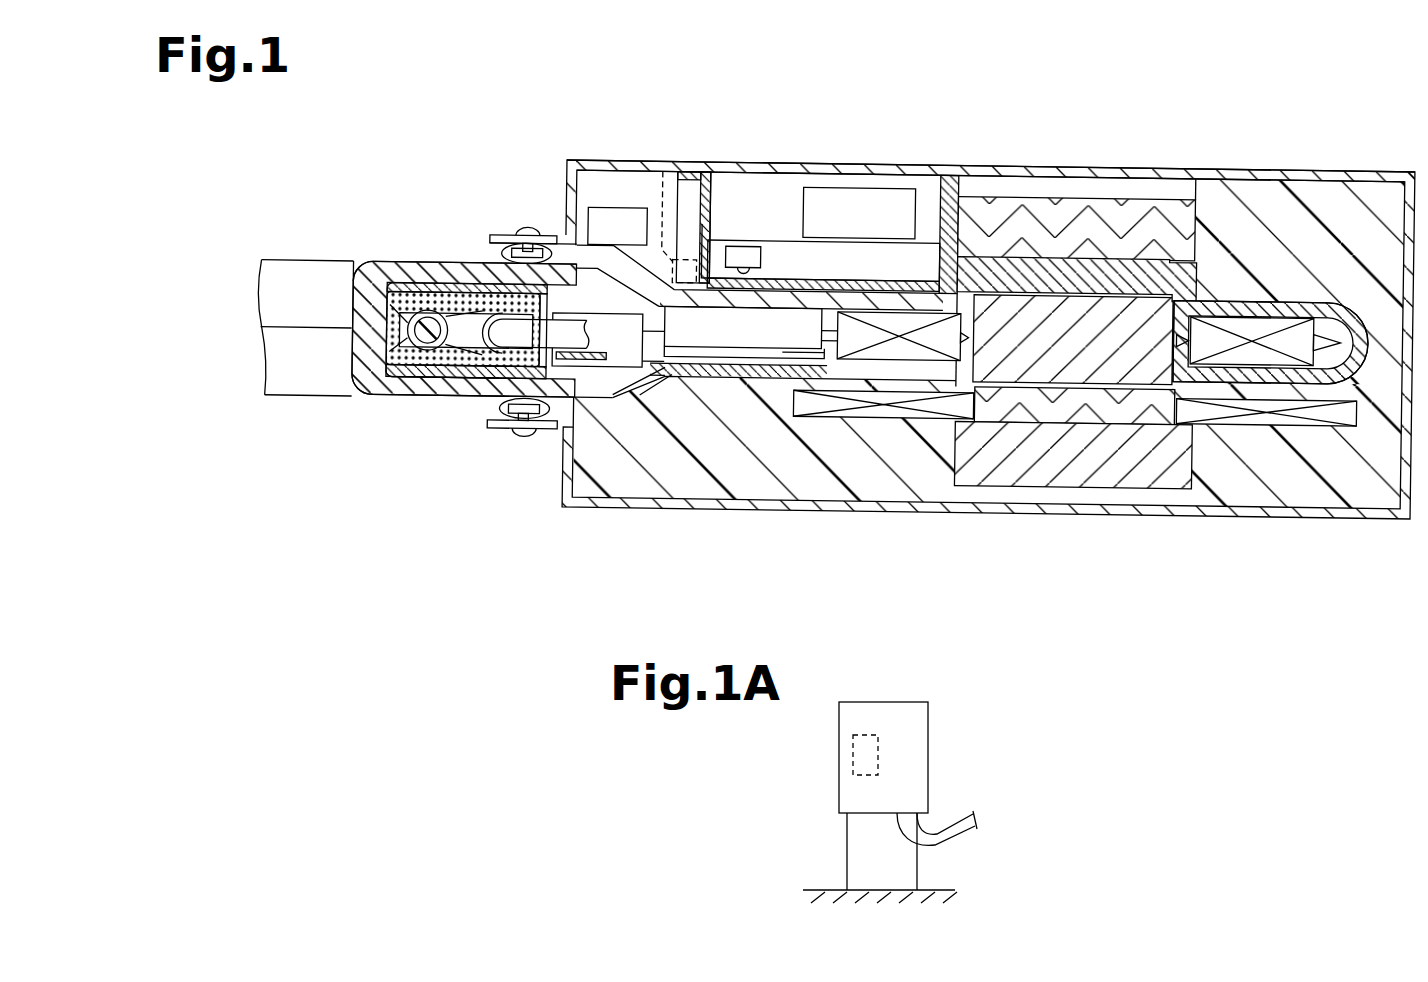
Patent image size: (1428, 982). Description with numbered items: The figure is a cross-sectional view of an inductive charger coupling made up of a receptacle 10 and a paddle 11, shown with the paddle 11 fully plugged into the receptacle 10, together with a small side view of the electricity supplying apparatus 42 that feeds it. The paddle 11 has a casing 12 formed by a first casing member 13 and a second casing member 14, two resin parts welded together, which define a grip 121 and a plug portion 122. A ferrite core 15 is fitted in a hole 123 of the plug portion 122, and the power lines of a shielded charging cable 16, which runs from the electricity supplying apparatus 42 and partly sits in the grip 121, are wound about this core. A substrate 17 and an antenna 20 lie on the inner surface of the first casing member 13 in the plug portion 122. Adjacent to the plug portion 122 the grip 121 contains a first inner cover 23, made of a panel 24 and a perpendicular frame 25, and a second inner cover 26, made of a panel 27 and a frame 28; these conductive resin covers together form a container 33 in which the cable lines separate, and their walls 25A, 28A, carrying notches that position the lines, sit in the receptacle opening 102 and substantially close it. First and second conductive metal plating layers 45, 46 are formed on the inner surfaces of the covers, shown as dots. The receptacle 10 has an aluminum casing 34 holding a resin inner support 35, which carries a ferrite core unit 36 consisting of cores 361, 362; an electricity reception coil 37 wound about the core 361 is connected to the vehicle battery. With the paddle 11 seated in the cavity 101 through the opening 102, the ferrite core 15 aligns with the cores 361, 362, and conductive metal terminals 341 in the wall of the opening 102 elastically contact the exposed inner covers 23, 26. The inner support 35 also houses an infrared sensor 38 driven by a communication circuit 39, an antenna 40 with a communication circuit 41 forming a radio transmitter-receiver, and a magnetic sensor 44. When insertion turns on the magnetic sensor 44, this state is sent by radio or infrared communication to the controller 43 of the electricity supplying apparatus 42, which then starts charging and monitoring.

In FIG. 1, the receptacle 10 is at (1031, 574).
In FIG. 1, the paddle 11 is at (377, 170).
In FIG. 1, the casing 12 is at (289, 260).
In FIG. 1, the first casing member 13 is at (305, 384).
In FIG. 1, the grip 121 is at (277, 395).
In FIG. 1, the second casing member 14 is at (337, 272).
In FIG. 1, the ferrite core 15 is at (1160, 310).
In FIG. 1A, the shielded charging cable 16 is at (955, 827).
In FIG. 1, the substrate 17 is at (760, 352).
In FIG. 1, the antenna 20 is at (632, 362).
In FIG. 1, the first inner cover 23 is at (449, 410).
In FIG. 1, the panel 24 is at (404, 400).
In FIG. 1, the frame 25 is at (352, 400).
In FIG. 1, the wall 25A is at (600, 395).
In FIG. 1, the second inner cover 26 is at (463, 271).
In FIG. 1, the panel 27 is at (480, 278).
In FIG. 1, the frame 28 is at (380, 283).
In FIG. 1, the wall 28A is at (547, 308).
In FIG. 1, the container 33 is at (414, 378).
In FIG. 1, the aluminum casing 34 is at (768, 166).
In FIG. 1, the resin inner support 35 is at (1263, 190).
In FIG. 1, the ferrite core unit 36 is at (1107, 438).
In FIG. 1, the core 361 is at (1123, 412).
In FIG. 1, the core 362 is at (1067, 280).
In FIG. 1, the electricity reception coil 37 is at (1268, 422).
In FIG. 1, the infrared sensor 38 is at (744, 251).
In FIG. 1, the communication circuit 39 is at (828, 196).
In FIG. 1, the antenna 40 is at (593, 212).
In FIG. 1, the communication circuit 41 is at (676, 193).
In FIG. 1A, the electricity supplying apparatus 42 is at (930, 748).
In FIG. 1A, the controller 43 is at (842, 757).
In FIG. 1, the magnetic sensor 44 is at (660, 172).
In FIG. 1, the first conductive metal plating layer 45 is at (385, 343).
In FIG. 1, the second conductive metal plating layer 46 is at (400, 307).
In FIG. 1, the cavity 101 is at (716, 360).
In FIG. 1, the opening 102 is at (566, 414).
In FIG. 1, the plug portion 122 is at (1355, 318).
In FIG. 1, the hole 123 is at (1166, 300).
In FIG. 1, the conductive metal terminals 341 is at (530, 229).